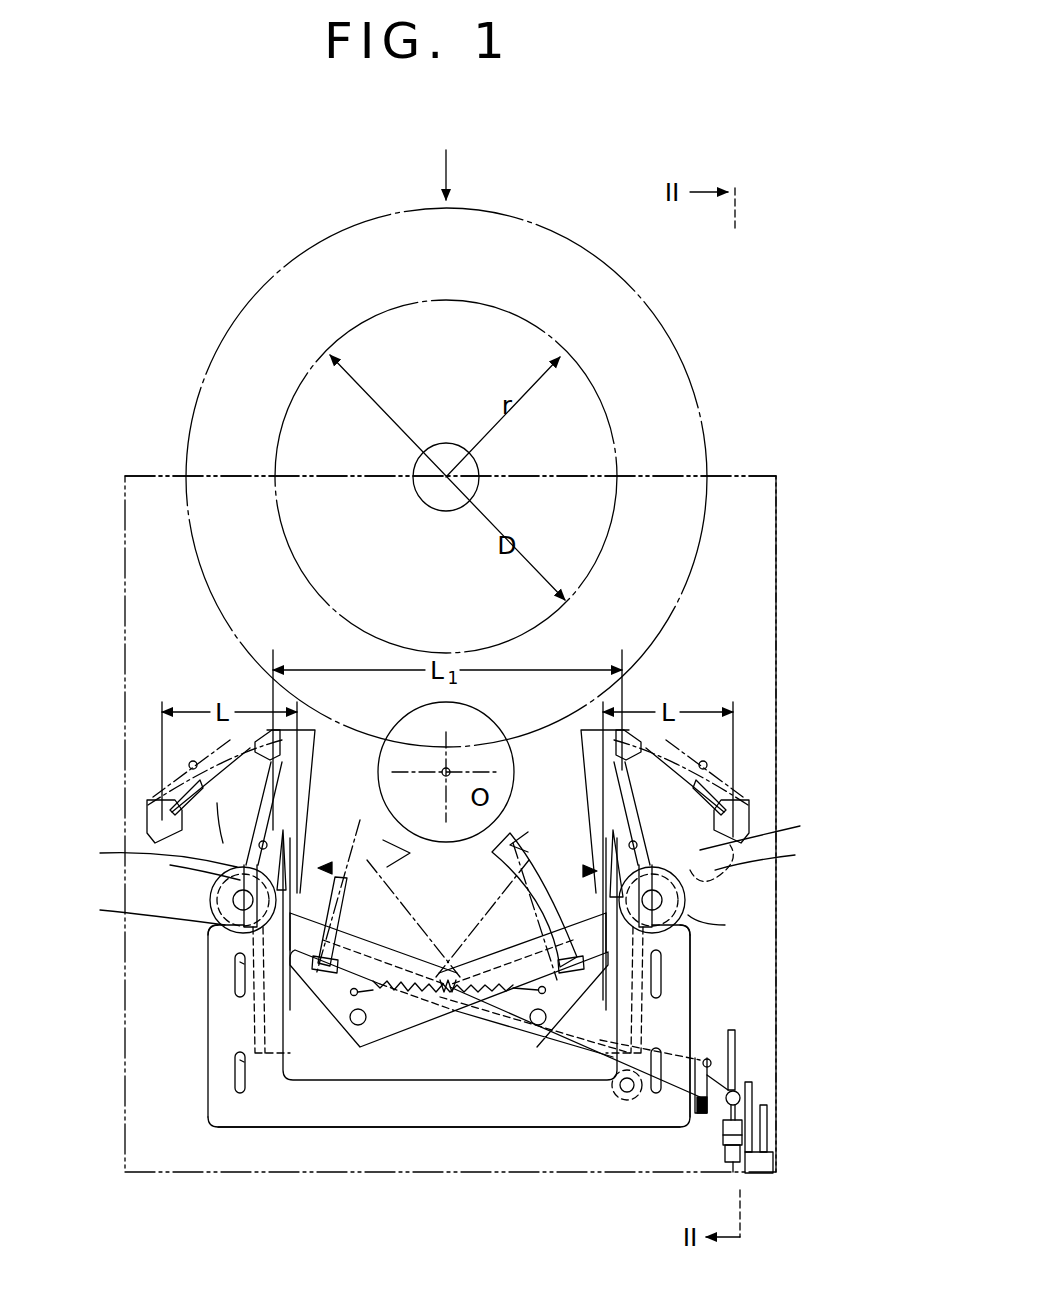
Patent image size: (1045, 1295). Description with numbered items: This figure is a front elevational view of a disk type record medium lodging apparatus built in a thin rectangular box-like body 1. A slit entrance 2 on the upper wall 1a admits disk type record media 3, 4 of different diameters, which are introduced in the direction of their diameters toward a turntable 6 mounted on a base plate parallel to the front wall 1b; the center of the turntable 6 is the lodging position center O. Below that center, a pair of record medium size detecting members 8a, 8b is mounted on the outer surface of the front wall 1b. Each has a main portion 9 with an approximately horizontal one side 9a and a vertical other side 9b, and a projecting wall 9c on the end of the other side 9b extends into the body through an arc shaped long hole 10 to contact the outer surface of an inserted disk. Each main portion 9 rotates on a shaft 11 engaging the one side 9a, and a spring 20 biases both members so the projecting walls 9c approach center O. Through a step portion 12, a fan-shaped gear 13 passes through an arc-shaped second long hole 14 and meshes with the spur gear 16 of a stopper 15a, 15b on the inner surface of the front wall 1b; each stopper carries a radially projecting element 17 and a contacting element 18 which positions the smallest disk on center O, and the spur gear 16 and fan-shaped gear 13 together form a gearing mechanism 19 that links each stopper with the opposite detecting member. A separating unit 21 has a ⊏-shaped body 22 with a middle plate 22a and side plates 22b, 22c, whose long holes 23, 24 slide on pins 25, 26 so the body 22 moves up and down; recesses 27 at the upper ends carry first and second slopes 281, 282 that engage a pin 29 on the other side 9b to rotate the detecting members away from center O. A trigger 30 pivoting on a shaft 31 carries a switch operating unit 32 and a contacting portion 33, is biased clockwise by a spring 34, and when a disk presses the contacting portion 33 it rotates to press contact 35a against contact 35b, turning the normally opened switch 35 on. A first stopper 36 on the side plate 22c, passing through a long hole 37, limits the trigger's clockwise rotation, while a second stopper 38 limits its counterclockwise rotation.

The body 1 is at (778, 500).
The upper wall 1a is at (762, 475).
The front wall 1b is at (777, 898).
The slit entrance 2 is at (700, 472).
The disk type record medium 3 is at (604, 400).
The disk type record medium 4 is at (687, 350).
The turntable 6 is at (512, 760).
The record medium size detecting member 8a is at (318, 757).
The record medium size detecting member 8b is at (600, 757).
The main portion 9 is at (370, 1047).
The one side 9a is at (385, 985).
The other side 9b is at (268, 802).
The projecting wall 9c is at (255, 745).
The arc shaped long hole 10 is at (168, 750).
The shaft 11 is at (350, 1012).
The step portion 12 is at (326, 955).
The fan-shaped gear 13 is at (255, 1010).
The arc-shaped second long hole 14 is at (383, 848).
The stopper 15a is at (332, 868).
The stopper 15b is at (583, 870).
The spur gear 16 is at (482, 860).
The radially projecting element 17 is at (298, 875).
The contacting element 18 is at (290, 860).
The gearing mechanism 19 is at (208, 940).
The spring 20 is at (448, 992).
The separating unit 21 is at (352, 1130).
The body 22 is at (532, 1130).
The middle plate 22a is at (452, 1130).
The side plate 22b is at (208, 1050).
The side plate 22c is at (692, 985).
The long hole 23 is at (240, 993).
The long hole 24 is at (662, 1010).
The pin 25 is at (235, 970).
The pin 26 is at (662, 975).
The recess 27 is at (215, 905).
The first slope 281 is at (410, 917).
The second slope 282 is at (447, 838).
The pin 29 is at (268, 843).
The trigger 30 is at (575, 1068).
The shaft 31 is at (622, 1095).
The switch operating unit 32 is at (741, 1097).
The contacting portion 33 is at (345, 872).
The spring 34 is at (725, 1160).
The switch 35 is at (775, 1163).
The contact 35a is at (752, 1088).
The contact 35b is at (768, 1112).
The first stopper 36 is at (700, 1112).
The long hole 37 is at (712, 1063).
The second stopper 38 is at (736, 1045).